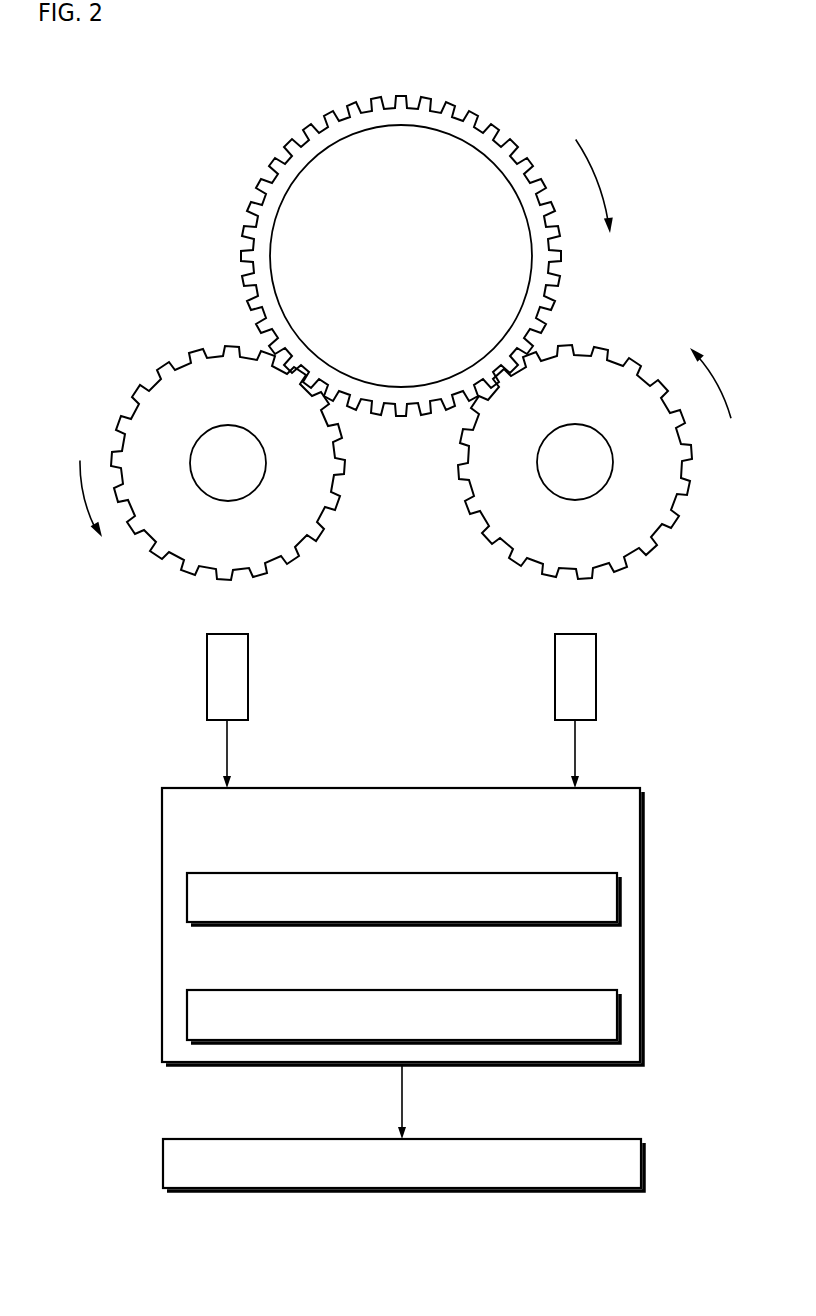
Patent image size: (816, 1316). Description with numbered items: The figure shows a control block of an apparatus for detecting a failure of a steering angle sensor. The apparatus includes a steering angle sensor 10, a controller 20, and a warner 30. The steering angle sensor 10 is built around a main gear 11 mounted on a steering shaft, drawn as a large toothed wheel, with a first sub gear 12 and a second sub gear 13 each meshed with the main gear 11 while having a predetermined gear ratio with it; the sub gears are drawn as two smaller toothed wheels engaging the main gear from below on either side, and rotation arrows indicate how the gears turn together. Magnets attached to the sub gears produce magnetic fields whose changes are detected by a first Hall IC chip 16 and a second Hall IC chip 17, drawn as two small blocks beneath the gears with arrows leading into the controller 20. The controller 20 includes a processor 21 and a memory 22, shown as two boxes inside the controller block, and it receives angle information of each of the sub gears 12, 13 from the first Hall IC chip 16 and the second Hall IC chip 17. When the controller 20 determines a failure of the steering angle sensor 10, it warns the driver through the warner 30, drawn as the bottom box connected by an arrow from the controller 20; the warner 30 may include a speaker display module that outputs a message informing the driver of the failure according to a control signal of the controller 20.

The steering angle sensor 10 is at (168, 143).
The main gear 11 is at (246, 232).
The first sub gear 12 is at (140, 388).
The second sub gear 13 is at (685, 455).
The first Hall IC chip 16 is at (211, 678).
The second Hall IC chip 17 is at (593, 678).
The controller 20 is at (618, 788).
The processor 21 is at (585, 873).
The memory 22 is at (585, 990).
The warner 30 is at (618, 1139).